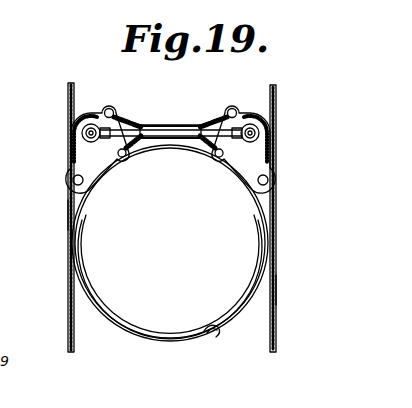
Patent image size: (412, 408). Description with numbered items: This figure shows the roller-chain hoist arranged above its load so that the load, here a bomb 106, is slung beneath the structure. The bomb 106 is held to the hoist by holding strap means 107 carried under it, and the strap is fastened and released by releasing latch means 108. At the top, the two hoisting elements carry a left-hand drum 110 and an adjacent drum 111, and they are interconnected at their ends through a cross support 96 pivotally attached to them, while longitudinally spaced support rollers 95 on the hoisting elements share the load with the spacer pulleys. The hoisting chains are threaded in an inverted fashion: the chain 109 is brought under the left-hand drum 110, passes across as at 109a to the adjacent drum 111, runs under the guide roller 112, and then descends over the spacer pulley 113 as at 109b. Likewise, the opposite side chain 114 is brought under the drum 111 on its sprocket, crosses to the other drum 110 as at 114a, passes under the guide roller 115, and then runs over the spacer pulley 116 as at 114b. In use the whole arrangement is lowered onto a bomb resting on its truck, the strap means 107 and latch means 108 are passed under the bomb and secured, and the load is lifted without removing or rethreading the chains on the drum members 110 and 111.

The support rollers 95 is at (221, 158).
The cross support 96 is at (112, 157).
The bomb 106 is at (170, 243).
The holding strap means 107 is at (134, 333).
The releasing latch means 108 is at (216, 338).
The chain 109 is at (68, 96).
The chain cross portion 109a is at (136, 148).
The chain downward portion 109b is at (276, 289).
The left-hand drum 110 is at (70, 133).
The drum 111 is at (276, 133).
The guide roller 112 is at (230, 108).
The spacer pulley 113 is at (275, 182).
The opposite side chain 114 is at (276, 96).
The chain cross portion 114a is at (152, 125).
The chain downward portion 114b is at (68, 213).
The guide roller 115 is at (111, 109).
The spacer pulley 116 is at (66, 183).